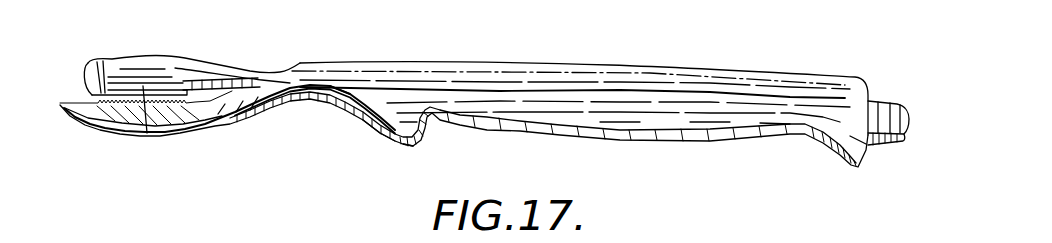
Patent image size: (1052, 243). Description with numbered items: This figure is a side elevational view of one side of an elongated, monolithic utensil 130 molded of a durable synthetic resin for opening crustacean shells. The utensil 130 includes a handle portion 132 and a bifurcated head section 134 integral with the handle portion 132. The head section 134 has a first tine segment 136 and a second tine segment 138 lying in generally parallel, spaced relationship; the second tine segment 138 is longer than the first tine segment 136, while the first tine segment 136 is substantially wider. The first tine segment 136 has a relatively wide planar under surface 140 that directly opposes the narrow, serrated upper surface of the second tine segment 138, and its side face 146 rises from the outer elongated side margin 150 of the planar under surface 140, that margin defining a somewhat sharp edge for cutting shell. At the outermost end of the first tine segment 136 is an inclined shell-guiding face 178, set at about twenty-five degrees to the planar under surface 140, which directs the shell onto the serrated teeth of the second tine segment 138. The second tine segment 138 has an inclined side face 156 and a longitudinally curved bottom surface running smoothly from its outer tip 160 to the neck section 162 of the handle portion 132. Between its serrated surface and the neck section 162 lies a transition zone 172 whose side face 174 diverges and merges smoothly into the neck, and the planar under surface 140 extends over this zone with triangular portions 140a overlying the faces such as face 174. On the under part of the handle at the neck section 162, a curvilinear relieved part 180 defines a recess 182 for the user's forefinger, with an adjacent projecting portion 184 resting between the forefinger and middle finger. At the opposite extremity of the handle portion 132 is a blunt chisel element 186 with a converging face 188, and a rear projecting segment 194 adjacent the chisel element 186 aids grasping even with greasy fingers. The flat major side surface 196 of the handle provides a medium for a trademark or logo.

The utensil 130 is at (455, 60).
The handle portion 132 is at (633, 64).
The head section 134 is at (297, 72).
The first tine segment 136 is at (173, 55).
The second tine segment 138 is at (160, 139).
The planar under surface 140 is at (147, 134).
The triangular portions 140a is at (246, 118).
The side face 146 is at (239, 53).
The outer elongated side margin 150 is at (134, 68).
The side face 156 is at (126, 112).
The outer tip 160 is at (62, 107).
The neck section 162 is at (300, 63).
The transition zone 172 is at (218, 100).
The side face 174 is at (200, 88).
The shell-guiding face 178 is at (88, 78).
The curvilinear relieved part 180 is at (360, 118).
The recess 182 is at (340, 141).
The projecting portion 184 is at (400, 142).
The chisel element 186 is at (893, 147).
The face of chisel element 188 is at (888, 108).
The rear projecting segment 194 is at (857, 157).
The major side surface 196 is at (620, 97).